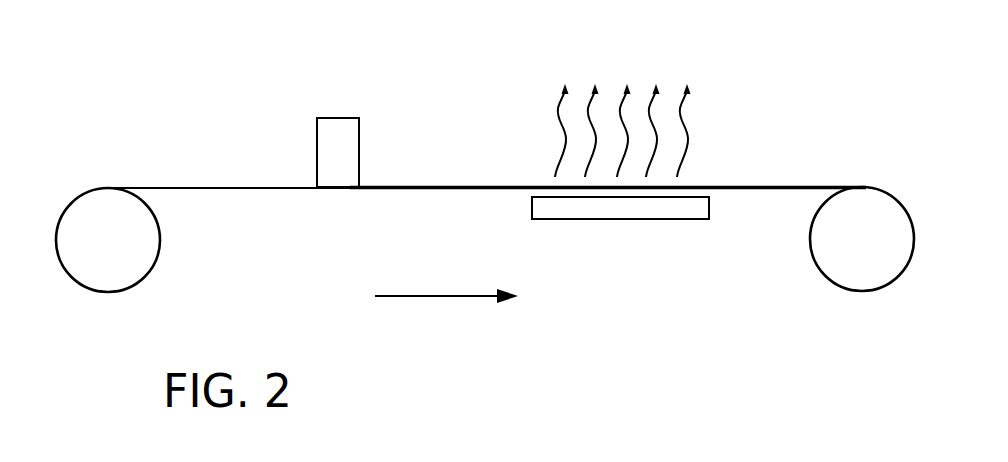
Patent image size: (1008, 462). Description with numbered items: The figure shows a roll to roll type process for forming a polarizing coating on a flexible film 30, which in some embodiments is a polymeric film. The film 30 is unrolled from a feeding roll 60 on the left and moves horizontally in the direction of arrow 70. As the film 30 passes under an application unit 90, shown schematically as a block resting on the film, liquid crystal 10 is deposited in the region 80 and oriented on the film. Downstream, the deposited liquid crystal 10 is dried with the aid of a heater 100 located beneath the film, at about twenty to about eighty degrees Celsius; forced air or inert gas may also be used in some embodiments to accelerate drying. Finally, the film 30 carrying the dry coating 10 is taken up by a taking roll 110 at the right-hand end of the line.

The liquid crystal 10 is at (760, 186).
The flexible film 30 is at (267, 190).
The feeding roll 60 is at (123, 258).
The arrow 70 is at (450, 297).
The region 80 is at (338, 215).
The application unit 90 is at (340, 117).
The heater 100 is at (669, 222).
The taking roll 110 is at (880, 263).